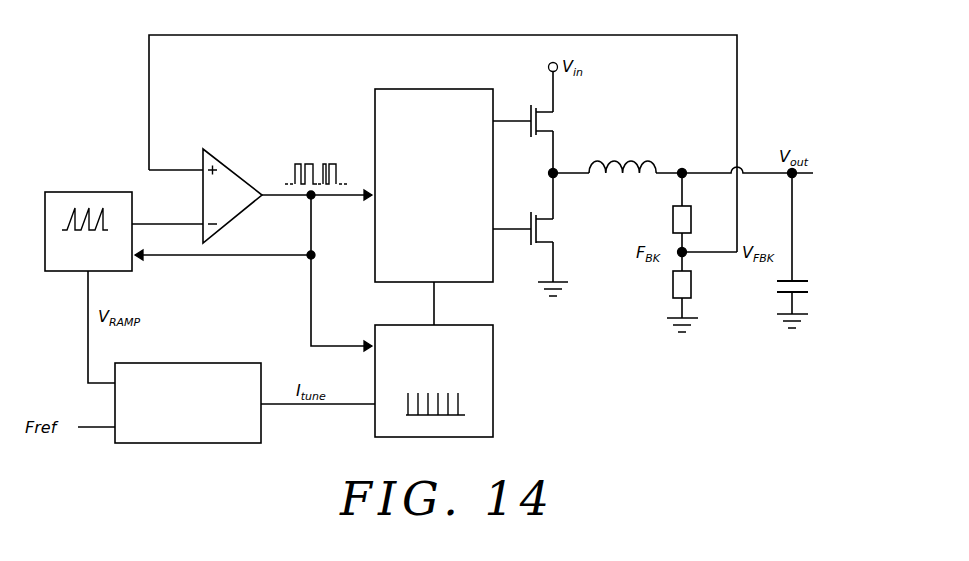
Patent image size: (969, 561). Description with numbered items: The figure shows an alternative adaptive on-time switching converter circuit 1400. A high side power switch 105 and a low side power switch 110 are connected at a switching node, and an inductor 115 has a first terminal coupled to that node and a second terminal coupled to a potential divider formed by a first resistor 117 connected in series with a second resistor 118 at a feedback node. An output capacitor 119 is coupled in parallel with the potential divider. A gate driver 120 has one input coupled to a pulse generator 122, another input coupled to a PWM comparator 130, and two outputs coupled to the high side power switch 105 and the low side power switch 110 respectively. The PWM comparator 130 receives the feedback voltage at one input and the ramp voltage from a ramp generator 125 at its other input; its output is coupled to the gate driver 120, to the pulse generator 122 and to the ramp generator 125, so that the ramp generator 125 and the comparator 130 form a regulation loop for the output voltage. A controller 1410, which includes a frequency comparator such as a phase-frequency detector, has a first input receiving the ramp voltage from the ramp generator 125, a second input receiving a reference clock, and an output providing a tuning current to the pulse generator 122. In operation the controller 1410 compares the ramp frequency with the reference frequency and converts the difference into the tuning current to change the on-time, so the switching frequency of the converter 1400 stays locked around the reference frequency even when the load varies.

The high side power switch 105 is at (556, 121).
The low side power switch 110 is at (556, 228).
The inductor 115 is at (622, 160).
The first resistor 117 is at (670, 225).
The second resistor 118 is at (670, 286).
The output capacitor 119 is at (773, 289).
The gate driver 120 is at (434, 185).
The pulse generator 122 is at (456, 325).
The ramp generator 125 is at (100, 191).
The Pulse Width Modulation PWM comparator 130 is at (232, 166).
The adaptive on-time AOT switching converter circuit 1400 is at (661, 373).
The controller 1410 is at (204, 363).